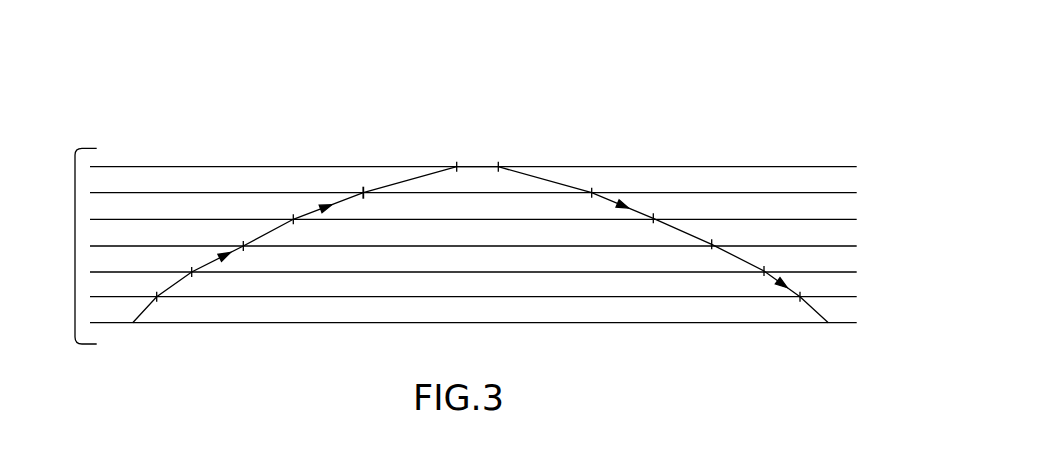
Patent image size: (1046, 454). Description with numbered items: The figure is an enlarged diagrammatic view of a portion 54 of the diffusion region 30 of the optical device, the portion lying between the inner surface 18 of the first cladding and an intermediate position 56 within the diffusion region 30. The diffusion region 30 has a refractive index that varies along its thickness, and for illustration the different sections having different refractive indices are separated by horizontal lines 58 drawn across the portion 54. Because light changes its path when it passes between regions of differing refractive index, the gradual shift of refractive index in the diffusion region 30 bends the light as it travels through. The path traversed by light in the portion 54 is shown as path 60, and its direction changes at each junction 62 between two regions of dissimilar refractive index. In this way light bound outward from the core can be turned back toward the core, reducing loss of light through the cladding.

The diffusion region 30 is at (766, 70).
The portion of the diffusion region 54 is at (75, 247).
The intermediate position 56 is at (217, 167).
The horizontal lines 58 is at (847, 192).
The path traversed by light 60 is at (543, 178).
The junction 62 is at (365, 188).
The inner surface of the first cladding 18 is at (322, 323).